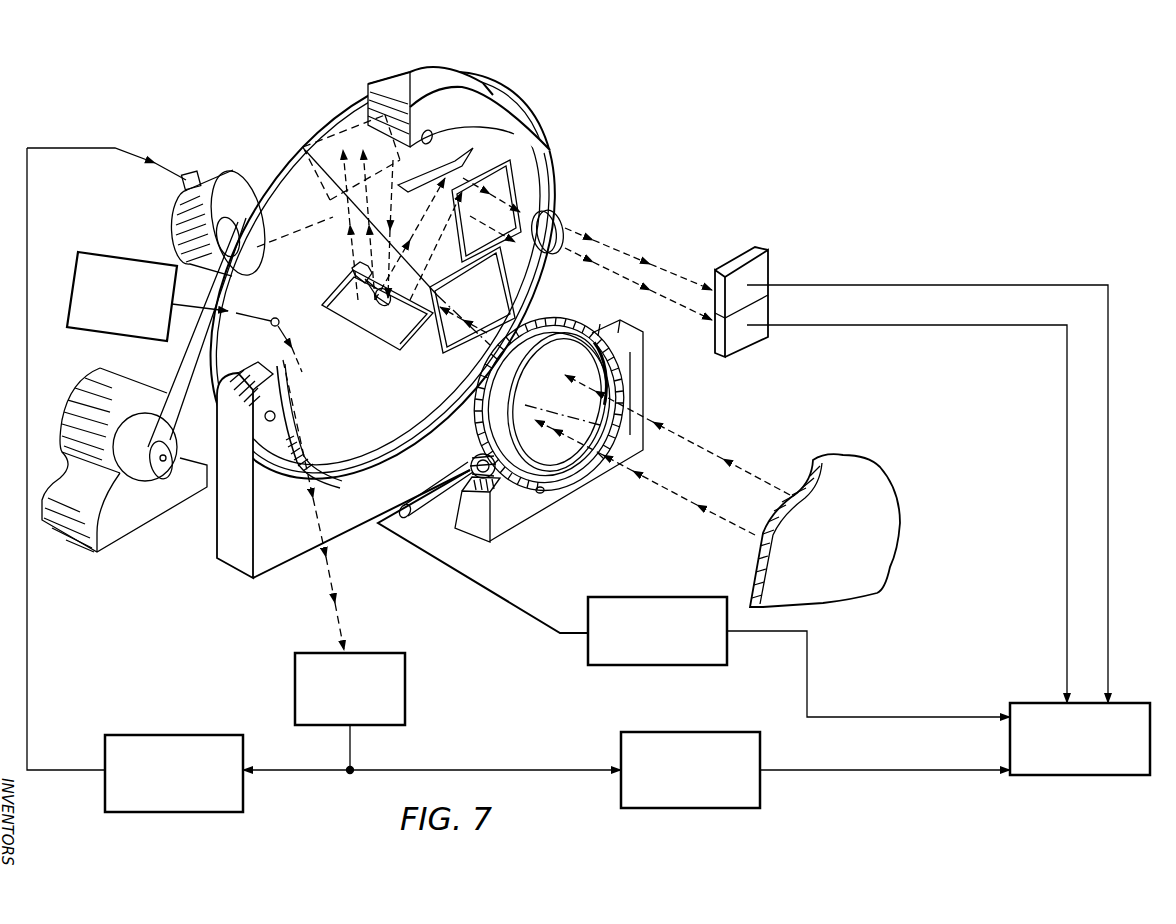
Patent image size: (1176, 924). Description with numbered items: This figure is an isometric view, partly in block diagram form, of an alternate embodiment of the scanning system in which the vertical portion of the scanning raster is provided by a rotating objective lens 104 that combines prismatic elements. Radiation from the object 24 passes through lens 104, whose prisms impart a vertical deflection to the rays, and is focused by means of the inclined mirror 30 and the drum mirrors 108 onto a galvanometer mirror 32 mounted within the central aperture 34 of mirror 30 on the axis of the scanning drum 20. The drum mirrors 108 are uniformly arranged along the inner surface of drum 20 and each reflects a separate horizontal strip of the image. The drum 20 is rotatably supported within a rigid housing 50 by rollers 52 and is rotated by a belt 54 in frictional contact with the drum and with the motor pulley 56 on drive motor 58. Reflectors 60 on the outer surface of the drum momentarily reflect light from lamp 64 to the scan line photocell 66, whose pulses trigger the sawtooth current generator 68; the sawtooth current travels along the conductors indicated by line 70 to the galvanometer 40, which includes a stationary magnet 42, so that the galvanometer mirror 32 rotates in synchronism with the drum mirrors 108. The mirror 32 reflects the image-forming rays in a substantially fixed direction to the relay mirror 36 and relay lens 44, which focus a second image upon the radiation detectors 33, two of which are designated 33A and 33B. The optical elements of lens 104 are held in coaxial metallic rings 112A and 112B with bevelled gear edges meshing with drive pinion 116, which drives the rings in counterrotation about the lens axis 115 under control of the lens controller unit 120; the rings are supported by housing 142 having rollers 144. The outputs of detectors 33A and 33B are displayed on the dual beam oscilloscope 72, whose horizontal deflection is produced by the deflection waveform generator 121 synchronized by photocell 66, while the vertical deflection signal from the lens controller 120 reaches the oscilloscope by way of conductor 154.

The scanning drum 20 is at (283, 180).
The object 24 is at (880, 549).
The inclined mirror 30 is at (362, 368).
The galvanometer mirror 32 is at (358, 318).
The radiation detectors 33 is at (748, 243).
The radiation detector 33A is at (764, 270).
The radiation detector 33B is at (760, 325).
The central aperture 34 is at (360, 340).
The relay mirror 36 is at (457, 144).
The galvanometer 40 is at (388, 230).
The stationary magnet 42 is at (178, 226).
The relay lens 44 is at (556, 222).
The housing 50 is at (284, 536).
The rollers 52 is at (432, 128).
The belt 54 is at (182, 372).
The motor pulley 56 is at (162, 472).
The drive motor 58 is at (76, 398).
The reflectors 60 is at (290, 306).
The lamp 64 is at (80, 272).
The scan line photocell 66 is at (405, 681).
The sawtooth current generator 68 is at (206, 735).
The line (conductors) 70 is at (74, 148).
The dual beam oscilloscope 72 is at (1131, 703).
The rotating objective lens 104 is at (634, 372).
The drum mirrors 108 is at (476, 293).
The metallic ring 112A is at (550, 335).
The metallic ring 112B is at (580, 346).
The axis of the lens 115 is at (630, 428).
The drive pinion 116 is at (470, 456).
The lens controller unit 120 is at (668, 597).
The deflection waveform generator 121 is at (686, 732).
The housing 142 is at (514, 516).
The rollers 144 is at (542, 492).
The conductor 154 is at (871, 717).